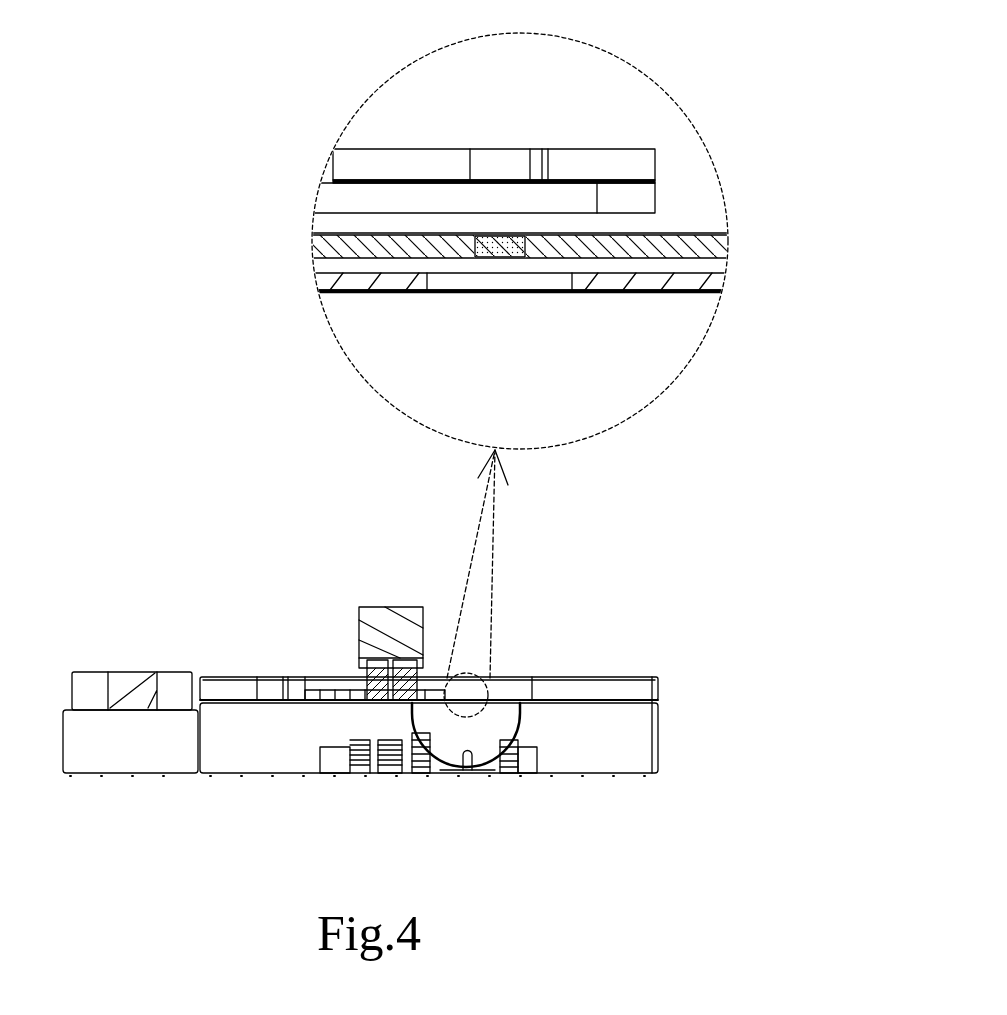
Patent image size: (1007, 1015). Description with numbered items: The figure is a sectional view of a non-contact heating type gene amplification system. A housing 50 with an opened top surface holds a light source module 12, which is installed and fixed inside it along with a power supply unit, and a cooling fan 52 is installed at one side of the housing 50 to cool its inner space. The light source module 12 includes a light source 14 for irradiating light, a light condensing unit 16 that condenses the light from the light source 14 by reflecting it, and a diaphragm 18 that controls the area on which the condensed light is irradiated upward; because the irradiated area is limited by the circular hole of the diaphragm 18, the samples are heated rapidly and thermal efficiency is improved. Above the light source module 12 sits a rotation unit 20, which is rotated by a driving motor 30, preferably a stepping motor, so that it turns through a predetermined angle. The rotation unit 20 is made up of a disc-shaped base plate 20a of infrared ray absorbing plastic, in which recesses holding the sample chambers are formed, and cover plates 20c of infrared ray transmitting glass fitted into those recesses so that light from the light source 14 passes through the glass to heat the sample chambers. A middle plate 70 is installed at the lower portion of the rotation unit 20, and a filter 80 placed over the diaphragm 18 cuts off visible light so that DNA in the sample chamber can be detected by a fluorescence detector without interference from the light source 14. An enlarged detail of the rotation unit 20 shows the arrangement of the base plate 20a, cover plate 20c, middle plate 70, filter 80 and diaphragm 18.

The rotation unit 20 is at (662, 175).
The cover plate 20c is at (408, 196).
The base plate 20a is at (613, 167).
The middle plate 70 is at (645, 248).
The filter 80 is at (494, 250).
The diaphragm 18 is at (543, 283).
The driving motor 30 is at (382, 613).
The light condensing unit 16 is at (522, 716).
The housing 50 is at (658, 736).
The cooling fan 52 is at (140, 757).
The light source 14 is at (462, 753).
The light source module 12 is at (524, 732).